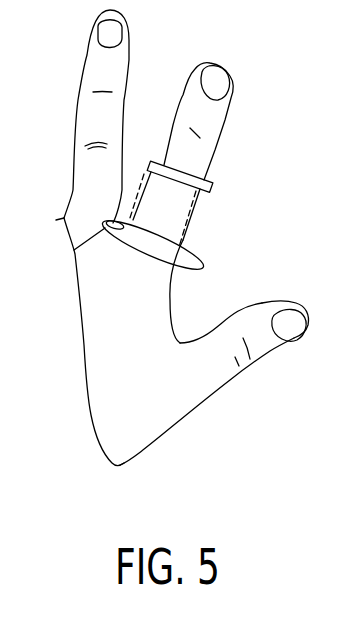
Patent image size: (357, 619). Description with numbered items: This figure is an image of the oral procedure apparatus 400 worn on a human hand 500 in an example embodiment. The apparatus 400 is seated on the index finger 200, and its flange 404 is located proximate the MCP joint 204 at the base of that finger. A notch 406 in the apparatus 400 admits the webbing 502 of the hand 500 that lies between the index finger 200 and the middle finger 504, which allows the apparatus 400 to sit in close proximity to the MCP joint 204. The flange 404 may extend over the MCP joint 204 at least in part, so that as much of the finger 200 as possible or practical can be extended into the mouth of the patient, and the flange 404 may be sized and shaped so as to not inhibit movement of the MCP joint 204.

The human hand 500 is at (132, 443).
The webbing 502 is at (75, 251).
The middle finger 504 is at (125, 41).
The index finger 200 is at (228, 99).
The MCP joint 204 is at (152, 243).
The oral procedure apparatus 400 is at (200, 212).
The flange 404 is at (190, 261).
The notch 406 is at (126, 222).